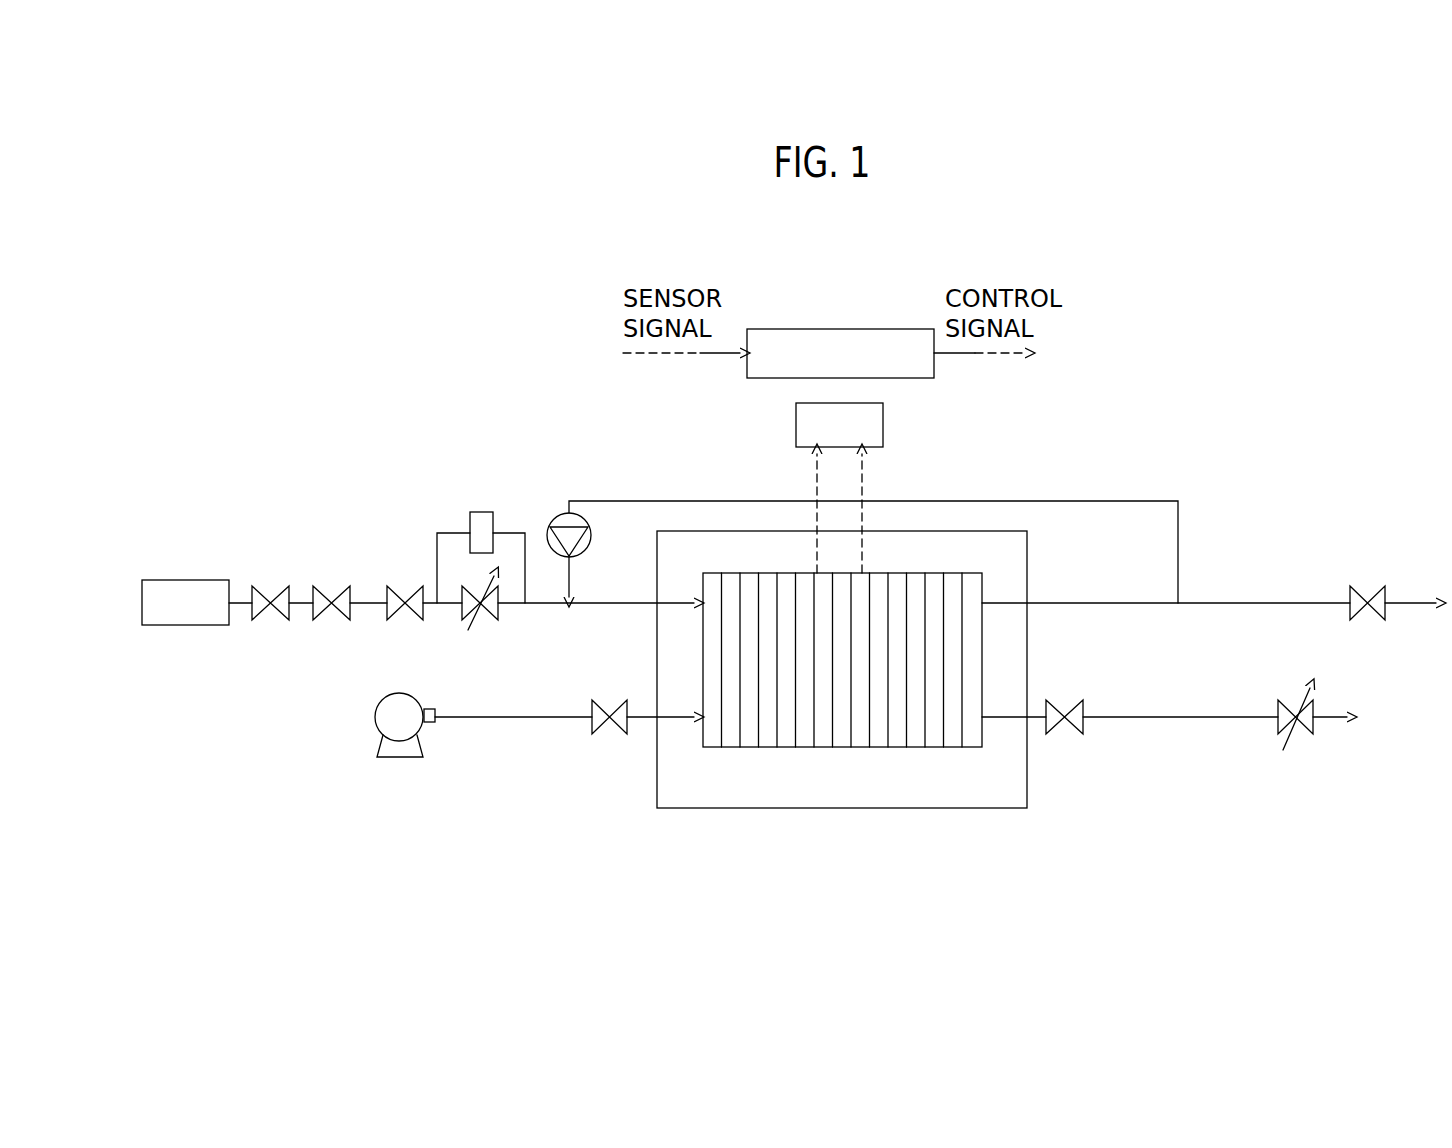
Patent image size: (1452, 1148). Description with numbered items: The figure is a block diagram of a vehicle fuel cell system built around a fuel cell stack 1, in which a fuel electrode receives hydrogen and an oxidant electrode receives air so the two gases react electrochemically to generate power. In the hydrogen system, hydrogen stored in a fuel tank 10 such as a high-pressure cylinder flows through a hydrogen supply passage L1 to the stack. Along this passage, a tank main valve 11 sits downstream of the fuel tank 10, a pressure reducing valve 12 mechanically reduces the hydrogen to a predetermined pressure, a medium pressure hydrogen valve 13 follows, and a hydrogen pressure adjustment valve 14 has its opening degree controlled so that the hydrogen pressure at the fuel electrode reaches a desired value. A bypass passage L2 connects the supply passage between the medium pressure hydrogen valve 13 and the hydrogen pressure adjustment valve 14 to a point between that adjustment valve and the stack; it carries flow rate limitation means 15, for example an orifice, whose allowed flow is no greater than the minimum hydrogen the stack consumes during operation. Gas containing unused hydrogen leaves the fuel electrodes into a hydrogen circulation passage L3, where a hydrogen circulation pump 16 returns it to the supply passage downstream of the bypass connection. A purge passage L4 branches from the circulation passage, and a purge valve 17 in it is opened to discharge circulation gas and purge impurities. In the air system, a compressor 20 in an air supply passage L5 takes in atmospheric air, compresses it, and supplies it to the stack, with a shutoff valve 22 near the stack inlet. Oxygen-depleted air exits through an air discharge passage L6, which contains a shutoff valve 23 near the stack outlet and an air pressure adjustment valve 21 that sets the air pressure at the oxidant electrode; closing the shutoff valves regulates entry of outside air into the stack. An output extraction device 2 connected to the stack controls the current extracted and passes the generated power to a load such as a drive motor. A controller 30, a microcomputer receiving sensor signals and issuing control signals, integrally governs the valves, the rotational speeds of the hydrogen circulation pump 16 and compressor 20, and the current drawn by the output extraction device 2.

The fuel cell stack 1 is at (847, 810).
The output extraction device 2 is at (883, 424).
The fuel tank 10 is at (192, 580).
The tank main valve 11 is at (270, 597).
The pressure reducing valve 12 is at (330, 597).
The medium pressure hydrogen valve 13 is at (405, 597).
The hydrogen pressure adjustment valve 14 is at (492, 620).
The flow rate limitation means 15 is at (480, 512).
The hydrogen circulation pump 16 is at (586, 550).
The purge valve 17 is at (1373, 622).
The compressor 20 is at (372, 720).
The air pressure adjustment valve 21 is at (1305, 735).
The shutoff valve 22 is at (613, 735).
The shutoff valve 23 is at (1072, 735).
The controller 30 is at (843, 328).
The hydrogen supply passage L1 is at (372, 607).
The bypass passage L2 is at (506, 530).
The hydrogen circulation passage L3 is at (1101, 500).
The purge passage L4 is at (1250, 602).
The air supply passage L5 is at (502, 720).
The air discharge passage L6 is at (1168, 716).